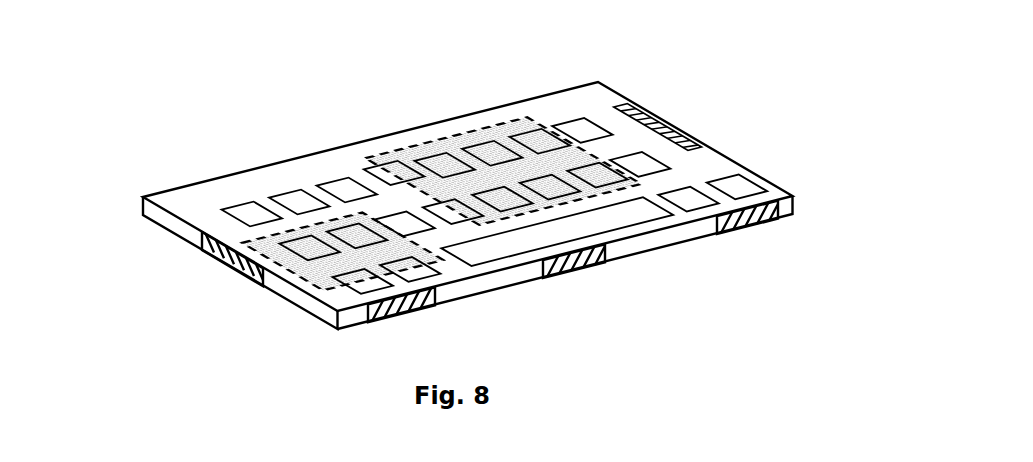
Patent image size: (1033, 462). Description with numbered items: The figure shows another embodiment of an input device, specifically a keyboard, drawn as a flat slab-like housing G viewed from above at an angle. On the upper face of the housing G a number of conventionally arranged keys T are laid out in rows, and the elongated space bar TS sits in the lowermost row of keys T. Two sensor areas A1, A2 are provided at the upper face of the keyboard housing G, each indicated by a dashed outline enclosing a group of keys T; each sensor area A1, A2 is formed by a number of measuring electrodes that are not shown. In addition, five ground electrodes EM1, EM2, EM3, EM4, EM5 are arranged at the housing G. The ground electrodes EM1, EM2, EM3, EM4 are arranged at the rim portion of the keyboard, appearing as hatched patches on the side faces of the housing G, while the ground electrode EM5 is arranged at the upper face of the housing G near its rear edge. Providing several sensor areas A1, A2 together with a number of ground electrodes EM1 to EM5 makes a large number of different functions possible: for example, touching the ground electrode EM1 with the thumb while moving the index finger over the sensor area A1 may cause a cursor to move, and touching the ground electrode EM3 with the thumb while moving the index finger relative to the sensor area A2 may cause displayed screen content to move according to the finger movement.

The housing G is at (468, 205).
The keys T is at (460, 183).
The first sensor area A1 is at (485, 157).
The second sensor area A2 is at (350, 284).
The space bar TS is at (581, 250).
The first ground electrode EM1 is at (588, 284).
The second ground electrode EM2 is at (765, 240).
The third ground electrode EM3 is at (411, 329).
The fourth ground electrode EM4 is at (222, 277).
The fifth ground electrode EM5 is at (666, 117).